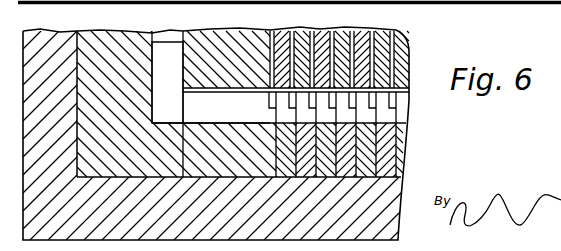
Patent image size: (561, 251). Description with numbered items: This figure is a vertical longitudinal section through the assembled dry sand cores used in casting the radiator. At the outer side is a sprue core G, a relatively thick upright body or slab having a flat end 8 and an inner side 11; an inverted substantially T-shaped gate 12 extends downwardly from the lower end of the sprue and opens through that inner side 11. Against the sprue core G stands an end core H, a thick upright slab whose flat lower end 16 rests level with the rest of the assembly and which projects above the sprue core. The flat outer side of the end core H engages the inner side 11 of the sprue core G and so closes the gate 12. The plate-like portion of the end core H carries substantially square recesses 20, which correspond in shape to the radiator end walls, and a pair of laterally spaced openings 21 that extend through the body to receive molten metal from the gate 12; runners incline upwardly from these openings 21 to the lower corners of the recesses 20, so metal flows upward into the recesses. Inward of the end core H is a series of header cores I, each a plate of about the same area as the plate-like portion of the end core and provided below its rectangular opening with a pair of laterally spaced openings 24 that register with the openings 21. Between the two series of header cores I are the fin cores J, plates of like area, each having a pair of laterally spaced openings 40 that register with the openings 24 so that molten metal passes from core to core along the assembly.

The flat end 8 is at (152, 181).
The inner side 11 is at (188, 32).
The inverted T-shaped gate 12 is at (173, 74).
The lower end 16 is at (236, 180).
The square recesses 20 is at (158, 33).
The laterally spaced openings 21 is at (215, 93).
The laterally spaced openings 24 is at (350, 113).
The laterally spaced openings 40 is at (396, 92).
The sprue core G is at (131, 50).
The end core H is at (262, 20).
The header core I is at (362, 43).
The fin core J is at (386, 32).